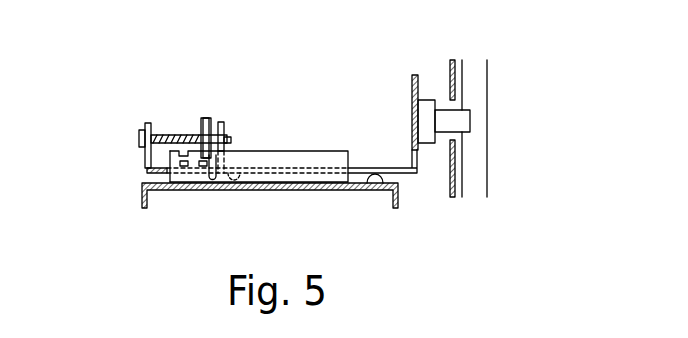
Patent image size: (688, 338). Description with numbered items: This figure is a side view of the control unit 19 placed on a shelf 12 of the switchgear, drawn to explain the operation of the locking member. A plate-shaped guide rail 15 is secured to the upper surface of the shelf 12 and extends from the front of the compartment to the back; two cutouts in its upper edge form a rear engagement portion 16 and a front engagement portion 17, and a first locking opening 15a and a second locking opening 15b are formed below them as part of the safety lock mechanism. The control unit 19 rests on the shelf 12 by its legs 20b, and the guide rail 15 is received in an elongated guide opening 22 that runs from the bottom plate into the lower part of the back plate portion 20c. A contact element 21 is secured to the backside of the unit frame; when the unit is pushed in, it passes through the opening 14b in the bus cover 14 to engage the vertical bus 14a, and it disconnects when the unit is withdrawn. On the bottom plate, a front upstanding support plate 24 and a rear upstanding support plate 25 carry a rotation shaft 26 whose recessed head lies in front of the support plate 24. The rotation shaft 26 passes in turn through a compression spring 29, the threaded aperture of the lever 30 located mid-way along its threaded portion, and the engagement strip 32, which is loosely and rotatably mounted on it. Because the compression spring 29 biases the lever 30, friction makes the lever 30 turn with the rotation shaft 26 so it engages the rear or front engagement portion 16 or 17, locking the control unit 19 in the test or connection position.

The shelf 12 is at (143, 183).
The bus cover 14 is at (496, 106).
The bus 14a is at (478, 96).
The opening 14b is at (455, 137).
The guide rail 15 is at (307, 152).
The first locking opening 15a is at (203, 168).
The second locking opening 15b is at (181, 167).
The rear engagement portion 16 is at (216, 170).
The front engagement portion 17 is at (168, 171).
The control unit 19 is at (289, 98).
The leg 20b is at (370, 184).
The back plate portion 20c is at (412, 135).
The contact element 21 is at (447, 110).
The guide opening 22 is at (415, 175).
The support plate 24 is at (148, 123).
The support plate 25 is at (224, 121).
The rotation shaft 26 is at (139, 139).
The compression spring 29 is at (172, 134).
The lever 30 is at (203, 118).
The engagement strip 32 is at (209, 119).